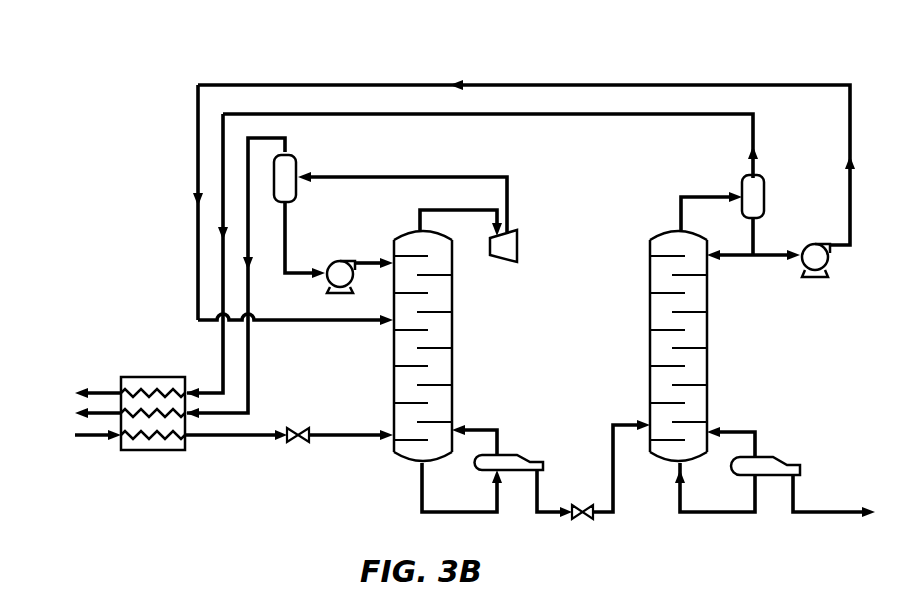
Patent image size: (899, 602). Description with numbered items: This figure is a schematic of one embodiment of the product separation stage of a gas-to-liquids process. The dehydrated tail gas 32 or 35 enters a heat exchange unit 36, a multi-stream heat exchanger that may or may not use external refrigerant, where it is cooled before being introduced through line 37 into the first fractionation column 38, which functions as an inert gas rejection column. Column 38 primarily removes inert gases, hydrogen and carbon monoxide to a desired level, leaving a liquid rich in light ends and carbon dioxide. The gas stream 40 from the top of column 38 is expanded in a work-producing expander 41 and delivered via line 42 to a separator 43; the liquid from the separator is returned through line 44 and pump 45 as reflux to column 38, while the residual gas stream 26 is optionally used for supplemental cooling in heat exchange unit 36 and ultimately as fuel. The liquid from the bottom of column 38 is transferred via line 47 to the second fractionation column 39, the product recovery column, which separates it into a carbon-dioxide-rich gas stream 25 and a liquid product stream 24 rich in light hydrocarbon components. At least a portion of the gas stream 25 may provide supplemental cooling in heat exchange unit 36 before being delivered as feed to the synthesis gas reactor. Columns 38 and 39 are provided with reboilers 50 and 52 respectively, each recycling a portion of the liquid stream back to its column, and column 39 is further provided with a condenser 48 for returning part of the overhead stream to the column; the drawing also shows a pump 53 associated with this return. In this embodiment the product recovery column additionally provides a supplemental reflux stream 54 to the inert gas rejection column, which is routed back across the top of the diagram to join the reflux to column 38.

The liquid product stream 24 is at (795, 498).
The CO2-rich gas stream 25 is at (612, 115).
The residual gas stream 26 is at (250, 372).
The dehydrated tail gas 32 is at (67, 447).
The dehydrated tail gas 35 is at (90, 439).
The heat exchange unit 36 is at (128, 452).
The line 37 is at (330, 435).
The first fractionation column 38 is at (455, 324).
The second fractionation column 39 is at (709, 332).
The gas stream 40 is at (420, 212).
The expander 41 is at (500, 262).
The line 42 is at (410, 178).
The separator 43 is at (300, 153).
The line 44 is at (289, 240).
The pump 45 is at (337, 293).
The line 47 is at (613, 444).
The condenser 48 is at (766, 199).
The reboiler 50 is at (517, 454).
The reboiler 52 is at (765, 456).
The reflux pump 53 is at (812, 278).
The supplemental reflux stream 54 is at (565, 86).